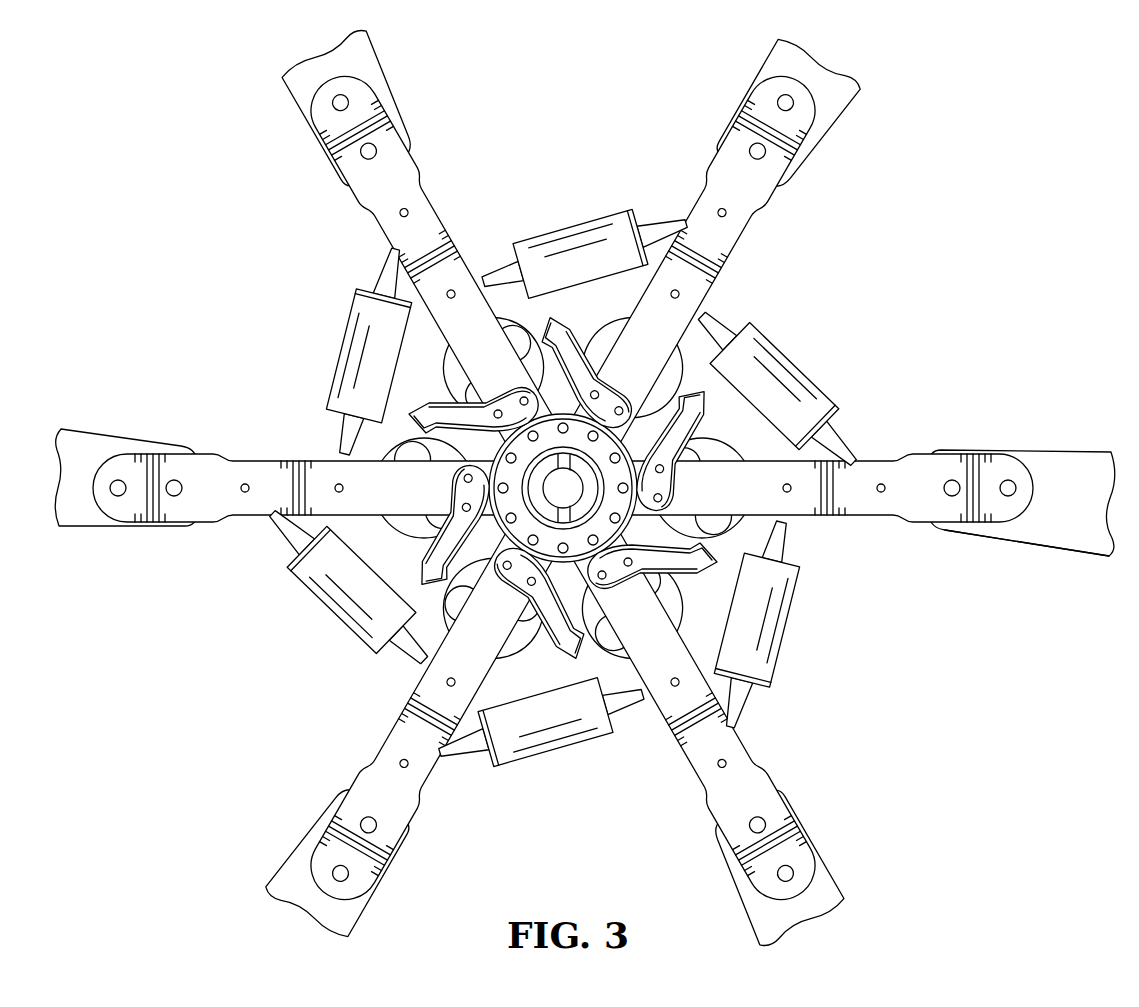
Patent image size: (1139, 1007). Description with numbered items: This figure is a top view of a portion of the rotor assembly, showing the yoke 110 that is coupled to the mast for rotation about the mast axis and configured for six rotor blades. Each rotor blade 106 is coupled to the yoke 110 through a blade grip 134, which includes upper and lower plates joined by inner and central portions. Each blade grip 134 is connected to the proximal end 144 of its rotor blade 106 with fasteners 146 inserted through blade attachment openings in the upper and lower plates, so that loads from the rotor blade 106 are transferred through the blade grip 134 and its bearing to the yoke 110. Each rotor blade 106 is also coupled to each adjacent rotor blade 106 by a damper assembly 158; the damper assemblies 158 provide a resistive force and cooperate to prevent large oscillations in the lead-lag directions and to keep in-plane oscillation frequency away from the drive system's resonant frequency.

The rotor blade 106 is at (1072, 450).
The yoke 110 is at (357, 425).
The blade grip 134 is at (880, 462).
The proximal end 144 is at (976, 540).
The fasteners 146 is at (1007, 482).
The damper assembly 158 is at (335, 612).